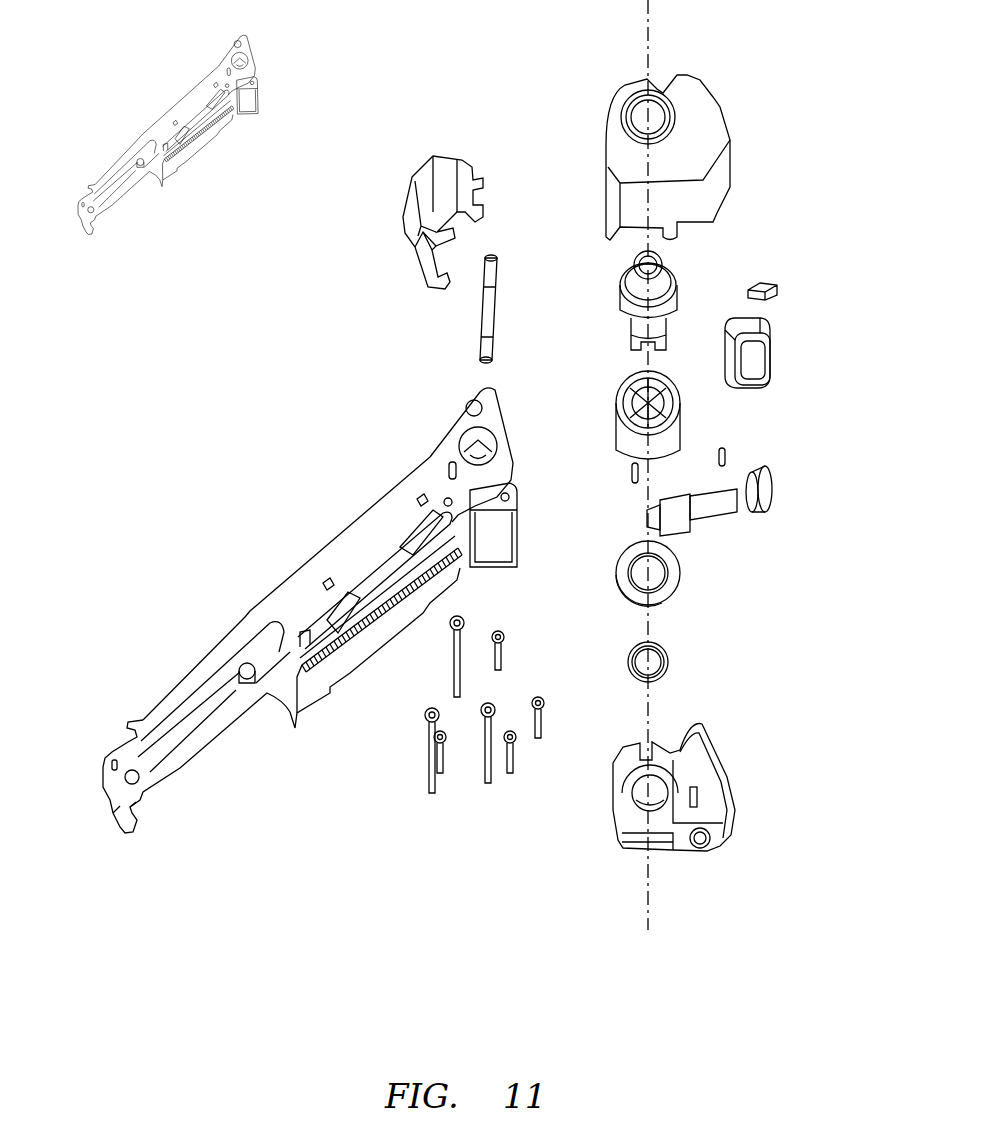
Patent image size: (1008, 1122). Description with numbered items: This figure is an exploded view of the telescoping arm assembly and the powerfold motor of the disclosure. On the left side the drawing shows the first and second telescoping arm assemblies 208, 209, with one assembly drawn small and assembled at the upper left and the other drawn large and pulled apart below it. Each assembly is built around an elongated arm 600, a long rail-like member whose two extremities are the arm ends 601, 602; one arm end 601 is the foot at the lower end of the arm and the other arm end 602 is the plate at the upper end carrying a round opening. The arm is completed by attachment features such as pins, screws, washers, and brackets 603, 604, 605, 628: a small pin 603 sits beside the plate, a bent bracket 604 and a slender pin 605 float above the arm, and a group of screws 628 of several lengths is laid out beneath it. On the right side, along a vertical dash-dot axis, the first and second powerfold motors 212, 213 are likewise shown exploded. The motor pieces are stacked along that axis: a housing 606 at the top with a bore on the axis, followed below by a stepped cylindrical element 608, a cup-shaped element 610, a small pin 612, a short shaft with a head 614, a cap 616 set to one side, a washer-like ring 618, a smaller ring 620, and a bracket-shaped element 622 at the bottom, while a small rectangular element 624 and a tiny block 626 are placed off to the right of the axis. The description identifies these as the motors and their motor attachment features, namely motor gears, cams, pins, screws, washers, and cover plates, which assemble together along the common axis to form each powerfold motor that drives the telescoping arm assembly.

The first telescoping arm assembly 208 is at (207, 176).
The second telescoping arm assembly 209 is at (211, 184).
The first powerfold motor 212 is at (748, 88).
The second powerfold motor 213 is at (747, 89).
The arm 600 is at (283, 607).
The arm end 601 is at (145, 836).
The arm end 602 is at (430, 400).
The attachment feature 603 is at (445, 468).
The attachment feature 604 is at (408, 208).
The attachment feature 605 is at (480, 352).
The powerfold motor element 606 is at (608, 130).
The powerfold motor element 608 is at (620, 292).
The powerfold motor element 610 is at (616, 405).
The powerfold motor element 612 is at (628, 475).
The powerfold motor element 614 is at (645, 520).
The powerfold motor element 616 is at (773, 490).
The powerfold motor element 618 is at (680, 580).
The powerfold motor element 620 is at (666, 665).
The powerfold motor element 622 is at (730, 842).
The powerfold motor element 624 is at (772, 365).
The powerfold motor element 626 is at (772, 283).
The attachment feature 628 is at (432, 806).